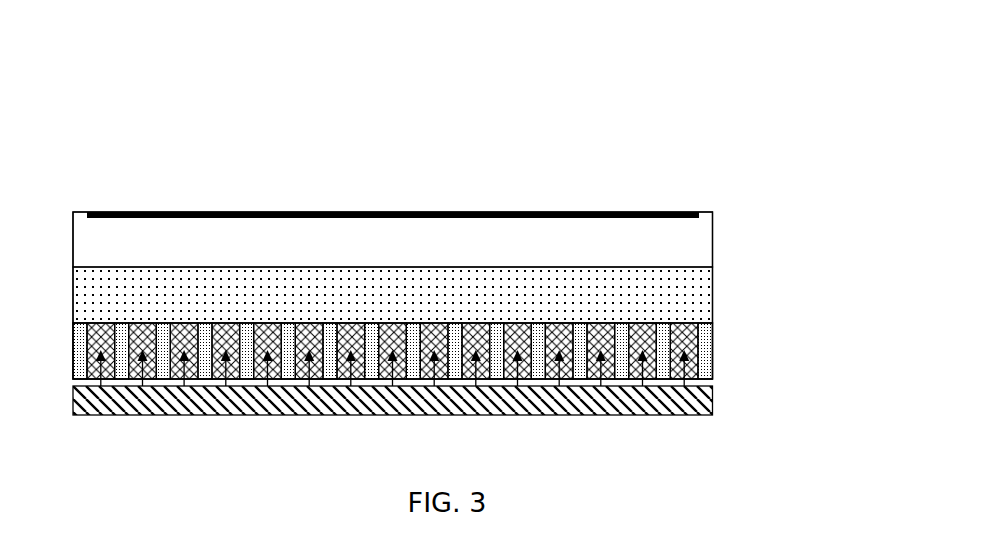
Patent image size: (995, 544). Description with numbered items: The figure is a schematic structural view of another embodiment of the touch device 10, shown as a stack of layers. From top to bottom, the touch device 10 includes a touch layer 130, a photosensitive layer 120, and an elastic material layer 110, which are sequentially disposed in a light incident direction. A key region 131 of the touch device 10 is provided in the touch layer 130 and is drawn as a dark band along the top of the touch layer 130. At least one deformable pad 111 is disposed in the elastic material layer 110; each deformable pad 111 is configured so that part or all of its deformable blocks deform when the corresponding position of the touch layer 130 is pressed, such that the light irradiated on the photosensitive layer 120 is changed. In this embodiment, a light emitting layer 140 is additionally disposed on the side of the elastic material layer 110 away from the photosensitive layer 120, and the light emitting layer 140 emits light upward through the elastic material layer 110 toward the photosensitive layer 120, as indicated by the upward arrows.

The touch device 10 is at (607, 185).
The key region 131 is at (673, 212).
The touch layer 130 is at (685, 233).
The photosensitive layer 120 is at (685, 290).
The elastic material layer 110 is at (448, 359).
The deformable pad 111 is at (685, 367).
The light emitting layer 140 is at (685, 407).